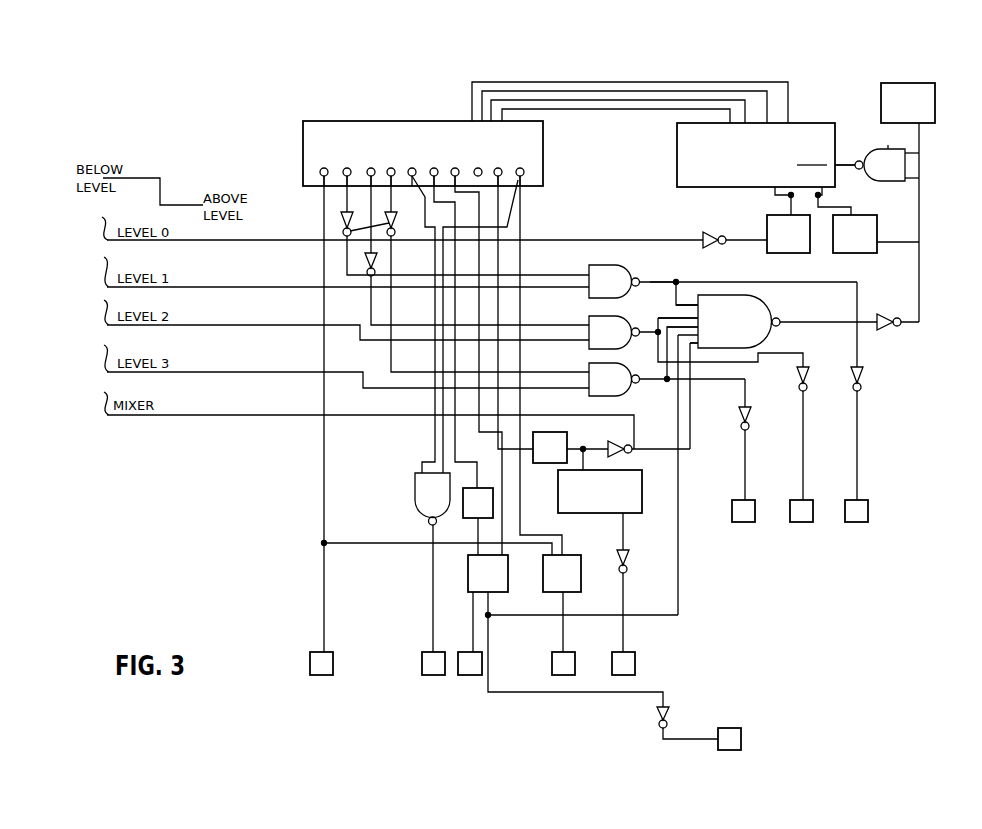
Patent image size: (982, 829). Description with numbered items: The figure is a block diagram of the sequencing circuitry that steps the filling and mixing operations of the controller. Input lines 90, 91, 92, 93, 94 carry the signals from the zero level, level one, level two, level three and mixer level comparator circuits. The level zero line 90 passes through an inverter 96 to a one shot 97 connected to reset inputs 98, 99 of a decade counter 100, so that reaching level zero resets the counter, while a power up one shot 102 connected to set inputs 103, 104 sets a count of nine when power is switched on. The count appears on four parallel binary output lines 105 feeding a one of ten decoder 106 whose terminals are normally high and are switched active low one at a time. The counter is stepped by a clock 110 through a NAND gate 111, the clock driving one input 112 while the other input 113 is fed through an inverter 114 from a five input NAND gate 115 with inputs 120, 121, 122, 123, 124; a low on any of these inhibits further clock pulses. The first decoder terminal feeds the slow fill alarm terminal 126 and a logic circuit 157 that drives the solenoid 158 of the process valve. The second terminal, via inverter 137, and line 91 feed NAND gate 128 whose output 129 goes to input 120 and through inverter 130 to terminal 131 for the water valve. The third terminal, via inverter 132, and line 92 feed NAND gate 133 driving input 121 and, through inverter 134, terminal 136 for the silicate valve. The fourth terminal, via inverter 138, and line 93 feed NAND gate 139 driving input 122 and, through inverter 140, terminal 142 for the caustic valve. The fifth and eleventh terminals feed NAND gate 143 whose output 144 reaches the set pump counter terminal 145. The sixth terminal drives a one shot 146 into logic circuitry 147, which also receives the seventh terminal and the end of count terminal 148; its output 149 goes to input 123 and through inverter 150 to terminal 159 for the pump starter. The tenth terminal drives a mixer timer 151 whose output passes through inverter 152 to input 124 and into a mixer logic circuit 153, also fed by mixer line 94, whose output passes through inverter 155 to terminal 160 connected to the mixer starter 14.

The mixer starter 14 is at (847, 156).
The level zero input line 90 is at (93, 219).
The level 1 input line 91 is at (333, 262).
The level 2 input line 92 is at (333, 310).
The level 3 input line 93 is at (333, 356).
The mixer input line 94 is at (356, 411).
The inverter 96 is at (705, 232).
The one shot 97 is at (767, 222).
The reset input 98 is at (773, 190).
The reset input 99 is at (818, 190).
The decade counter 100 is at (823, 143).
The power up one shot 102 is at (880, 243).
The set input 103 is at (812, 156).
The set input 104 is at (840, 186).
The parallel binary output lines 105 is at (619, 80).
The 1 of 10 decoder 106 is at (519, 145).
The clock 110 is at (935, 120).
The NAND gate 111 is at (886, 148).
The NAND gate input 112 is at (912, 155).
The NAND gate input 113 is at (912, 179).
The inverter 114 is at (886, 326).
The NAND gate 115 is at (748, 297).
The NAND gate input 120 is at (698, 293).
The NAND gate input 121 is at (690, 310).
The NAND gate input 122 is at (695, 318).
The NAND gate input 123 is at (695, 335).
The NAND gate input 124 is at (698, 352).
The slow fill alarm terminal 126 is at (325, 662).
The NAND gate 128 is at (620, 274).
The output 129 is at (674, 264).
The inverter 130 is at (862, 372).
The terminal 131 is at (845, 507).
The inverter 132 is at (375, 268).
The NAND gate 133 is at (617, 326).
The inverter 134 is at (808, 370).
The terminal 136 is at (790, 507).
The inverter 137 is at (340, 222).
The inverter 138 is at (343, 230).
The NAND gate 139 is at (627, 384).
The inverter 140 is at (748, 416).
The terminal 142 is at (732, 507).
The NAND gate 143 is at (420, 512).
The output 144 is at (433, 600).
The set pump counter terminal 145 is at (422, 658).
The one shot 146 is at (493, 513).
The logic circuitry 147 is at (472, 582).
The end of count terminal 148 is at (458, 658).
The output 149 is at (490, 606).
The inverter 150 is at (667, 712).
The mixer timer 151 is at (560, 432).
The inverter 152 is at (608, 445).
The mixer logic circuit 153 is at (625, 470).
The inverter 155 is at (627, 556).
The logic circuit 157 is at (581, 560).
The solenoid 158 is at (552, 660).
The terminal 159 is at (740, 730).
The terminal 160 is at (635, 662).